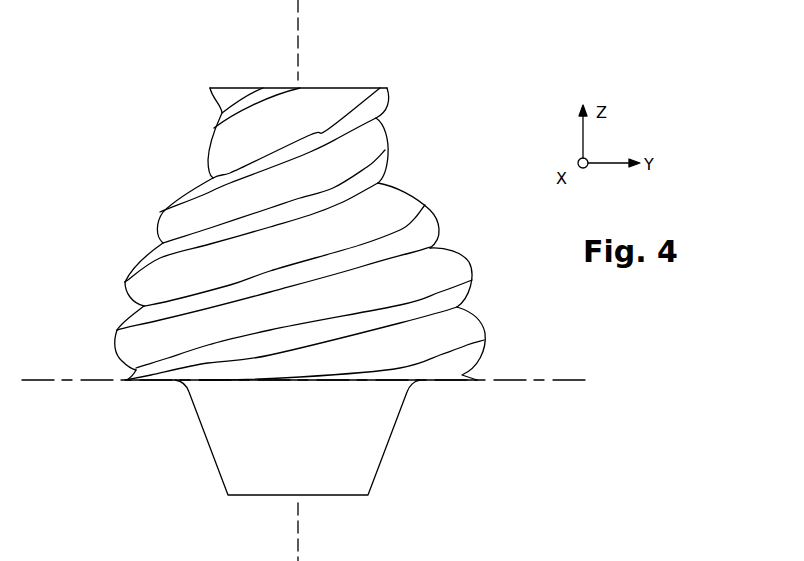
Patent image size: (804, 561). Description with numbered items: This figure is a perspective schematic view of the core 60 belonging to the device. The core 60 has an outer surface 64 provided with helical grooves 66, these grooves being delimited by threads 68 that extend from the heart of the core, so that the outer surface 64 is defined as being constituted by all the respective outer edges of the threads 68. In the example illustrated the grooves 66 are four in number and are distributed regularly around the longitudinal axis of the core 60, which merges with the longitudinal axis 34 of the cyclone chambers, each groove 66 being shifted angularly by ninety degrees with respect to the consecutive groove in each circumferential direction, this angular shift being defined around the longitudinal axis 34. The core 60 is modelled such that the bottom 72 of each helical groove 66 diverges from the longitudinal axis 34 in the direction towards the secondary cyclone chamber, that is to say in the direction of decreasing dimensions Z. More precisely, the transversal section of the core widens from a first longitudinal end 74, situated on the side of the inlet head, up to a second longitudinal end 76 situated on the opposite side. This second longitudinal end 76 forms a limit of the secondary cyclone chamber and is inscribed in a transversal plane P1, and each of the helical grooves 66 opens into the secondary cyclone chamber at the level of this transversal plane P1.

The longitudinal axis 34 is at (285, 0).
The core 60 is at (309, 271).
The outer surface 64 is at (477, 278).
The helical grooves 66 is at (388, 213).
The threads 68 is at (160, 277).
The bottom 72 is at (443, 333).
The first longitudinal end 74 is at (345, 88).
The second longitudinal end 76 is at (147, 382).
The transversal plane P1 is at (570, 383).